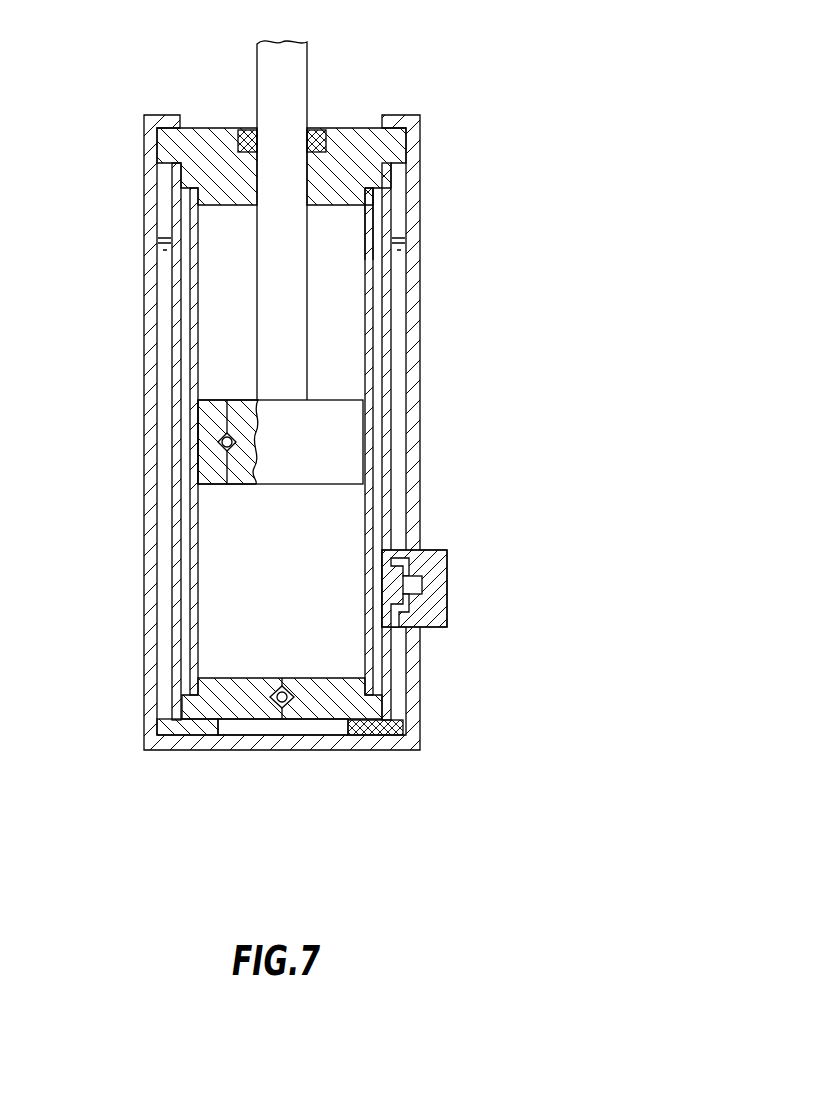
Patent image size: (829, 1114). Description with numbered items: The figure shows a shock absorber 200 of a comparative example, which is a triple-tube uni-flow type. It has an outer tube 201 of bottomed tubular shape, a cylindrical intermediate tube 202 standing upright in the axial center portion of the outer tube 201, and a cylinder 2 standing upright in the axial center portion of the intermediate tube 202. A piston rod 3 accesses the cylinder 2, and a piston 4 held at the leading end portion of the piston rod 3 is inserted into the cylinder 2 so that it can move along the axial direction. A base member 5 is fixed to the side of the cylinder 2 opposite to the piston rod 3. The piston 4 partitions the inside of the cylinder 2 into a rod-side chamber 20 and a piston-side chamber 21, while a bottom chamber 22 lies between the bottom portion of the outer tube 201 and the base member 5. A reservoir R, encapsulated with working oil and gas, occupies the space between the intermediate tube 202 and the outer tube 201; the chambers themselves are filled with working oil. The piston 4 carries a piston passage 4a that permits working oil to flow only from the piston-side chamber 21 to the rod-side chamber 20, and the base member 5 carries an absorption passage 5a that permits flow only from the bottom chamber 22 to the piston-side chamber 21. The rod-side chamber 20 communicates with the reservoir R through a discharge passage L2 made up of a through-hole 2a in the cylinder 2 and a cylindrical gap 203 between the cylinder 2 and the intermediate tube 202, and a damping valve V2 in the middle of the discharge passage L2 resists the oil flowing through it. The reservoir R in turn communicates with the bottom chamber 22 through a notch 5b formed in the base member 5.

The shock absorber 200 is at (460, 110).
The cylinder 2 is at (192, 573).
The through-hole 2a is at (383, 228).
The piston rod 3 is at (297, 90).
The piston 4 is at (280, 441).
The piston passage 4a is at (212, 398).
The base member 5 is at (282, 668).
The absorption passage 5a is at (288, 684).
The notch 5b is at (405, 722).
The rod-side chamber 20 is at (246, 298).
The piston-side chamber 21 is at (289, 593).
The bottom chamber 22 is at (258, 730).
The outer tube 201 is at (420, 389).
The intermediate tube 202 is at (388, 470).
The cylindrical gap 203 is at (186, 334).
The reservoir R is at (398, 302).
The discharge passage L2 is at (382, 512).
The damping valve V2 is at (447, 590).